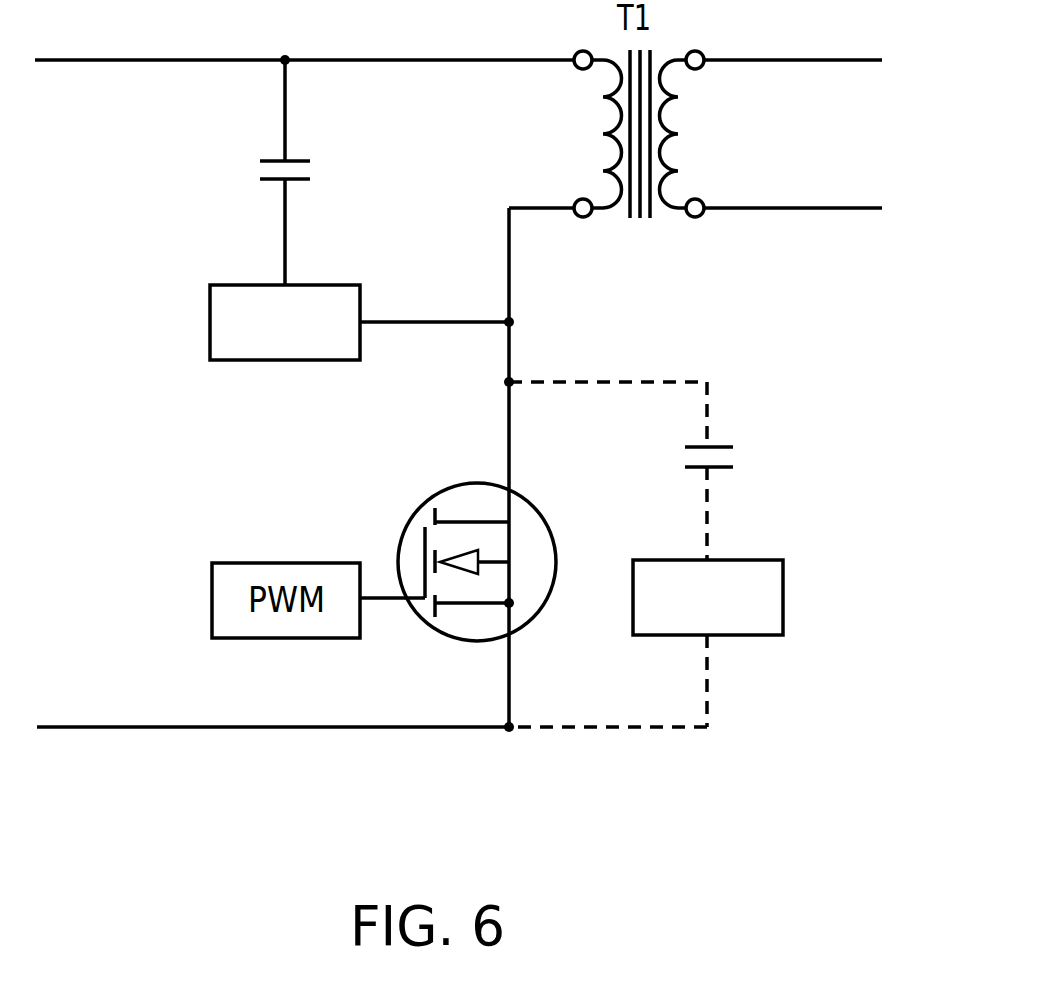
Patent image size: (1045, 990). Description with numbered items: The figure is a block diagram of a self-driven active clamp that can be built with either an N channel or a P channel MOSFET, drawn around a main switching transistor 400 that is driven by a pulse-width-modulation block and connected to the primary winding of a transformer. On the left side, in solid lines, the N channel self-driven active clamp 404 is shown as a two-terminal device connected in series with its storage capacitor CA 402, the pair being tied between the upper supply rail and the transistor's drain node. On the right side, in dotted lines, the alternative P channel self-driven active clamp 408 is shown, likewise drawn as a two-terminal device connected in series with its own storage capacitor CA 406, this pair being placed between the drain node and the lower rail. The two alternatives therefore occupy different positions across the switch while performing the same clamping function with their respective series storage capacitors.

The switching transistor 400 is at (447, 487).
The storage capacitor CA 402 is at (257, 155).
The N channel SDAC 404 is at (257, 282).
The storage capacitor CA 406 is at (729, 432).
The P channel SDAC 408 is at (729, 558).